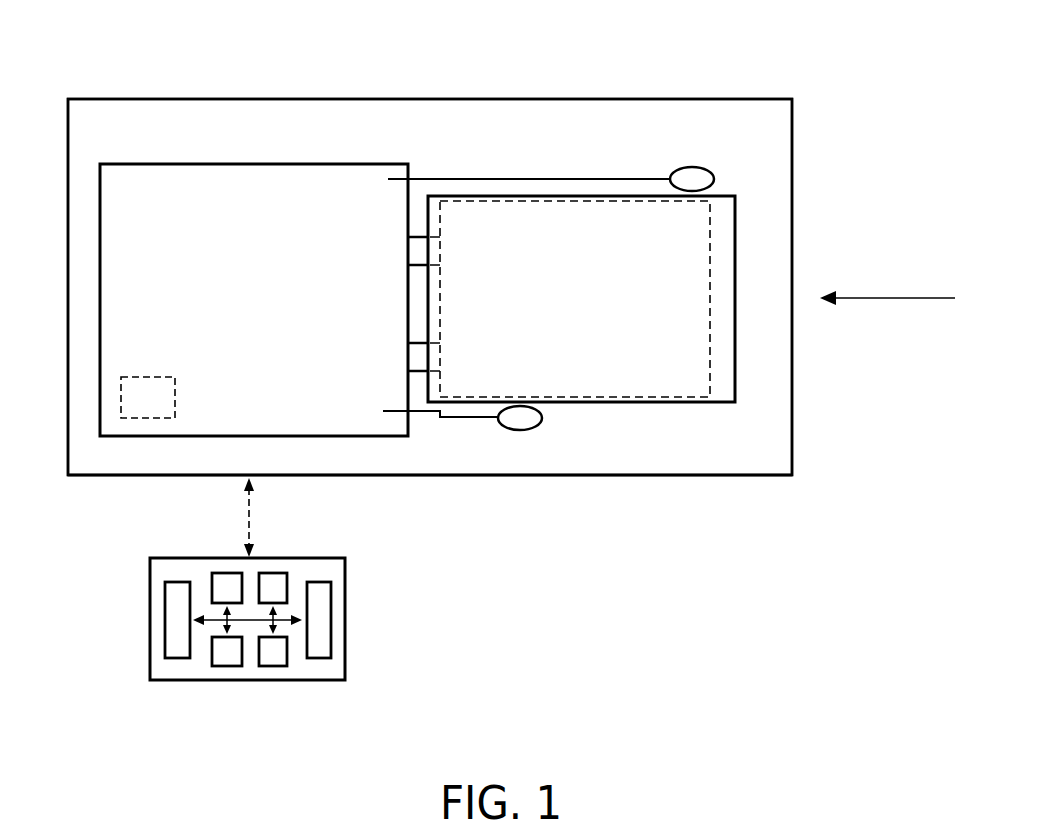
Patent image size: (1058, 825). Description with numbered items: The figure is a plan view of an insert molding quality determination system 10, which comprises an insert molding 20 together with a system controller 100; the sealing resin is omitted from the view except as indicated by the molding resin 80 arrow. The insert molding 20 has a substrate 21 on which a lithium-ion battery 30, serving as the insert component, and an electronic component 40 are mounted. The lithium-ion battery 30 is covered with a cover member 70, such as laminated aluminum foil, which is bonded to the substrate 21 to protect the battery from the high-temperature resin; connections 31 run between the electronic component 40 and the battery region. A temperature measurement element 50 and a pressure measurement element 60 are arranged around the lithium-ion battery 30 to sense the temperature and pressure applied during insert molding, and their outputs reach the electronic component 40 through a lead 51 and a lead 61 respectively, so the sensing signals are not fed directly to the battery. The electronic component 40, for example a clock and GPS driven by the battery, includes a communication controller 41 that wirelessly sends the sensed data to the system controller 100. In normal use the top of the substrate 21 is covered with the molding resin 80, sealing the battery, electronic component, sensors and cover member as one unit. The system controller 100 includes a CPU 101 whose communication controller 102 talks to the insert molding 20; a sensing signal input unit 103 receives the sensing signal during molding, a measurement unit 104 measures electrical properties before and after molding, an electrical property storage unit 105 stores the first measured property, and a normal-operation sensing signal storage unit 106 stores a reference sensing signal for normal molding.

The insert molding quality determination system 10 is at (582, 94).
The insert molding 20 is at (505, 99).
The substrate 21 is at (610, 458).
The lithium-ion battery 30 is at (665, 353).
The bonding wires 31 is at (412, 356).
The electronic component 40 is at (278, 182).
The communication controller 41 is at (142, 418).
The temperature measurement element 50 is at (702, 167).
The lead 51 is at (463, 179).
The pressure measurement element 60 is at (540, 427).
The lead 61 is at (418, 411).
The cover member 70 is at (717, 367).
The molding resin 80 is at (170, 115).
The system controller 100 is at (345, 612).
The CPU 101 is at (320, 647).
The communication controller 102 is at (177, 637).
The sensing signal input unit 103 is at (217, 557).
The measurement unit 104 is at (227, 655).
The electrical property storage unit 105 is at (282, 557).
The normal-operation sensing signal storage unit 106 is at (273, 655).